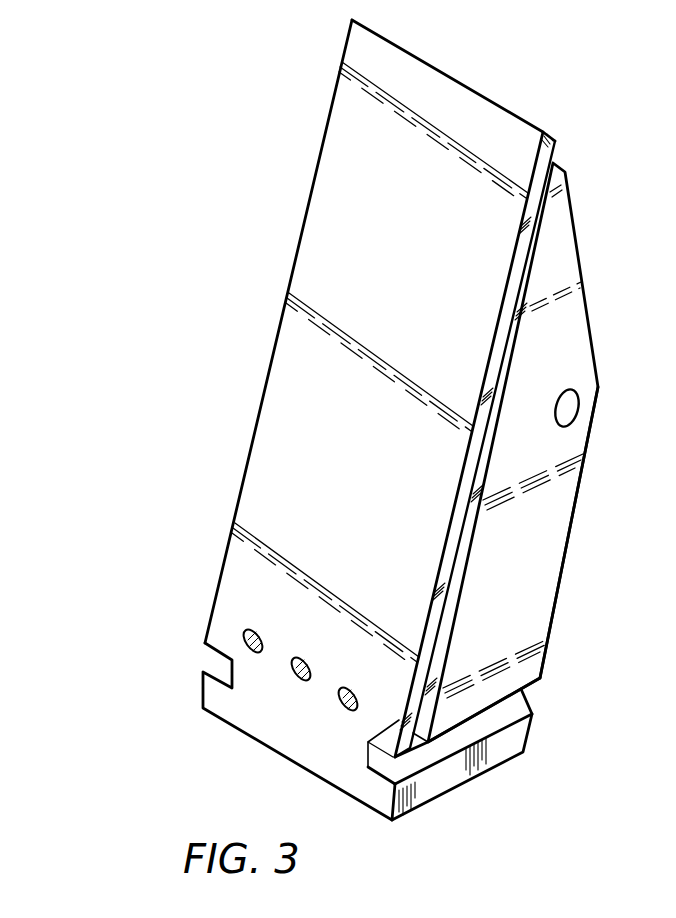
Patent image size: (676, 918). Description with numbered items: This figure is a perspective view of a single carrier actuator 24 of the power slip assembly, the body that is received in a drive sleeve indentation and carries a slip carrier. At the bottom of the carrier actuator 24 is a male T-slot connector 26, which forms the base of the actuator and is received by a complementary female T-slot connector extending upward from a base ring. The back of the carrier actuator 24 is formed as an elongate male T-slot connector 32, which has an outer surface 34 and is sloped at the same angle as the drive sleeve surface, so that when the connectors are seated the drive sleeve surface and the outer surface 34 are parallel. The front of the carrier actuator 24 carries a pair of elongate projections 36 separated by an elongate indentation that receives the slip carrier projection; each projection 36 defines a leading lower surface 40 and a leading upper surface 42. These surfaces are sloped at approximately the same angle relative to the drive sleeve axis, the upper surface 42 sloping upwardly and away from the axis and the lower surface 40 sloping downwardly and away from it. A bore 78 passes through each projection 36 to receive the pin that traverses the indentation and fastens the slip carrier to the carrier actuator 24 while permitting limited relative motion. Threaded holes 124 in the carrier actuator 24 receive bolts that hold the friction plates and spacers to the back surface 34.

The carrier actuator 24 is at (488, 637).
The male T-slot connector 26 is at (450, 775).
The elongate male T-slot connector 32 is at (545, 158).
The outer surface 34 is at (317, 264).
The elongate projections 36 is at (562, 498).
The leading lower surface 40 is at (565, 563).
The leading upper surface 42 is at (591, 311).
The bores 78 is at (568, 409).
The threaded holes 124 is at (250, 636).